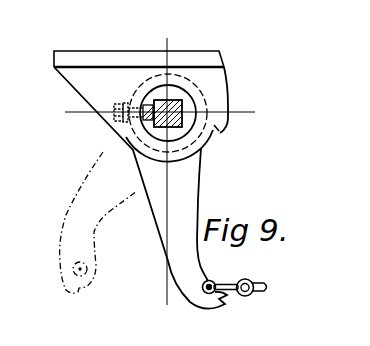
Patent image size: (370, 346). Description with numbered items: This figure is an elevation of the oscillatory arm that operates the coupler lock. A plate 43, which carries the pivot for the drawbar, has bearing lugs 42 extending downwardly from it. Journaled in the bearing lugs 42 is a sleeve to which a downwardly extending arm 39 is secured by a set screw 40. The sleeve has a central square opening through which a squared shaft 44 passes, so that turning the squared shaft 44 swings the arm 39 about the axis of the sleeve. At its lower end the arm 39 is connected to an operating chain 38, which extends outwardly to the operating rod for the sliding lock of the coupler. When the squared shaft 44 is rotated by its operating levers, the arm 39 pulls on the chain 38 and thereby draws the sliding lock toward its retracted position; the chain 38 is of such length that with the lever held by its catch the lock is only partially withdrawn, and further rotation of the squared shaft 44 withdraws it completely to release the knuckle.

The operating chain 38 is at (257, 292).
The downwardly extending arm 39 is at (187, 200).
The set screw 40 is at (113, 119).
The bearing lugs 42 is at (219, 134).
The plate 43 is at (221, 53).
The squared shaft 44 is at (182, 113).